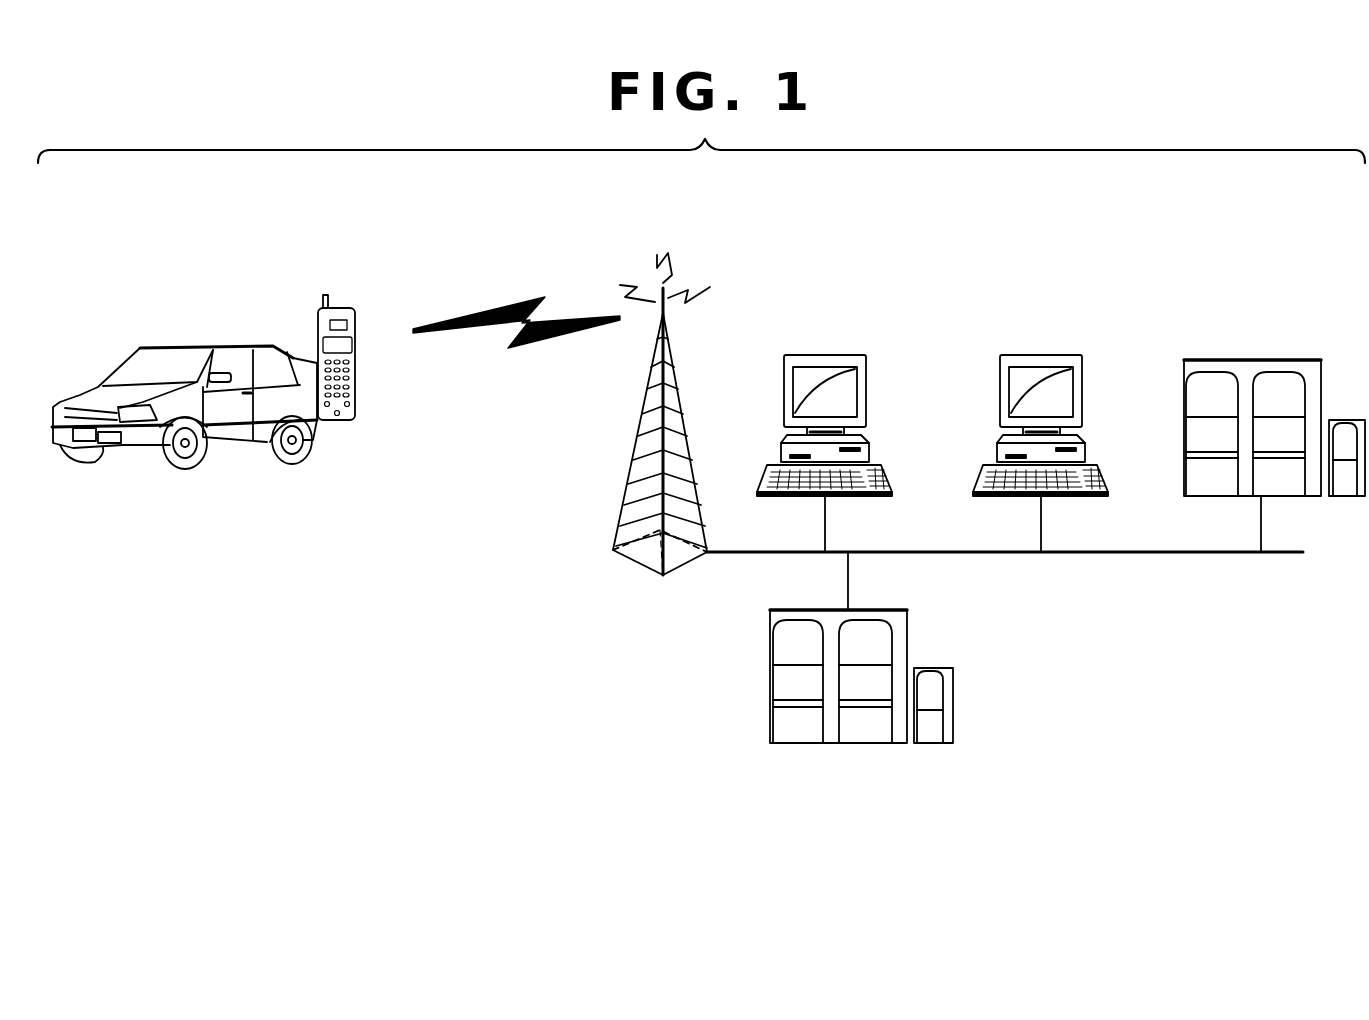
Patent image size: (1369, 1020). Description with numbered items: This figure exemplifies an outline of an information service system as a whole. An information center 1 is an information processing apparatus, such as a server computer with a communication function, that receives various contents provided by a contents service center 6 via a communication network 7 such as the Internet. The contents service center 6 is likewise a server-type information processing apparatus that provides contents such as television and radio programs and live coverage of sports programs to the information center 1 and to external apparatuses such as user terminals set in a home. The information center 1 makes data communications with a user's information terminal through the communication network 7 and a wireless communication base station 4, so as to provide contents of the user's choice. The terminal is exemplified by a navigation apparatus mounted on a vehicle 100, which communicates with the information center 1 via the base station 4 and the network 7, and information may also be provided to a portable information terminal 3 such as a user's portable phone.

The vehicle 100 is at (133, 448).
The portable information terminal 3 is at (345, 308).
The wireless communication base station 4 is at (630, 575).
The information center 1 is at (1262, 360).
The contents service center 6 is at (845, 745).
The communication network 7 is at (1150, 556).